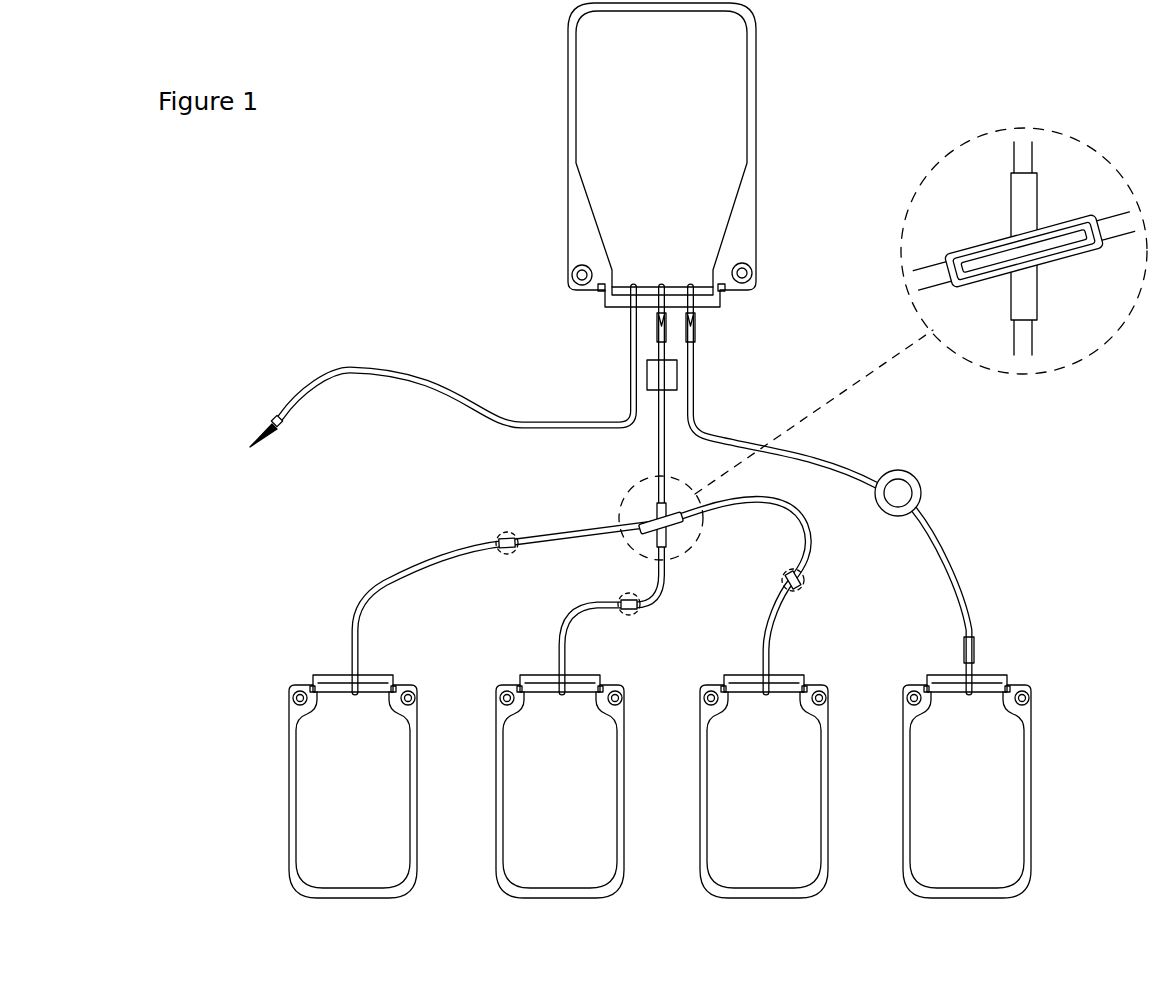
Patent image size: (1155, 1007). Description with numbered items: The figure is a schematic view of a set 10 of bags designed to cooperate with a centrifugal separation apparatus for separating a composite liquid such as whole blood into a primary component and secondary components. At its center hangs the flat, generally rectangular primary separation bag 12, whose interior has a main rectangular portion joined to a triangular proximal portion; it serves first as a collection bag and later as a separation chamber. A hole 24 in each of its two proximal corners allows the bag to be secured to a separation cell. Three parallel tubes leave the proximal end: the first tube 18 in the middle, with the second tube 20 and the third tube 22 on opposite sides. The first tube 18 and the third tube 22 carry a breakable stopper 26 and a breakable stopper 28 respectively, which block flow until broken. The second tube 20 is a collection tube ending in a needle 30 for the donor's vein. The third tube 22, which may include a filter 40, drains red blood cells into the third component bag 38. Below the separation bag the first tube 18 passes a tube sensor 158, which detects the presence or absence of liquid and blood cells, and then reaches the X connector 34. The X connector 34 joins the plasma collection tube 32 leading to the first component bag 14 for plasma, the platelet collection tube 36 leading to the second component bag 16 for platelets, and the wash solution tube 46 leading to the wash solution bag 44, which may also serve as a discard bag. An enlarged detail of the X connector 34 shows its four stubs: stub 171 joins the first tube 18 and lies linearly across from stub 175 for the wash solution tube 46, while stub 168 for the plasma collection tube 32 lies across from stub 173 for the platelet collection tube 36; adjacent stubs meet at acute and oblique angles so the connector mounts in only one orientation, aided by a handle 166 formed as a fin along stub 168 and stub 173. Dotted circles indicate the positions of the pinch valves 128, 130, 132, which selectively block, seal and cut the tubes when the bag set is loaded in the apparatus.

The set of bags 10 is at (432, 270).
The primary separation bag 12 is at (570, 68).
The first component bag 14 is at (334, 676).
The second component bag 16 is at (745, 676).
The first tube 18 is at (665, 460).
The second tube 20 is at (518, 420).
The third tube 22 is at (953, 577).
The hole 24 is at (573, 267).
The breakable stopper 26 is at (657, 328).
The breakable stopper 28 is at (695, 330).
The needle 30 is at (276, 425).
The plasma collection tube 32 is at (400, 586).
The X connector 34 is at (665, 527).
The platelet collection tube 36 is at (765, 615).
The third component bag 38 is at (945, 676).
The filter 40 is at (916, 480).
The wash solution bag 44 is at (540, 676).
The wash solution tube 46 is at (565, 622).
The pinch valve 128 is at (504, 535).
The pinch valve 130 is at (624, 598).
The pinch valve 132 is at (806, 582).
The tube sensor 158 is at (678, 377).
The handle 166 is at (992, 254).
The stub 168 is at (990, 278).
The stub 171 is at (1010, 208).
The stub 173 is at (1057, 228).
The stub 175 is at (1038, 282).